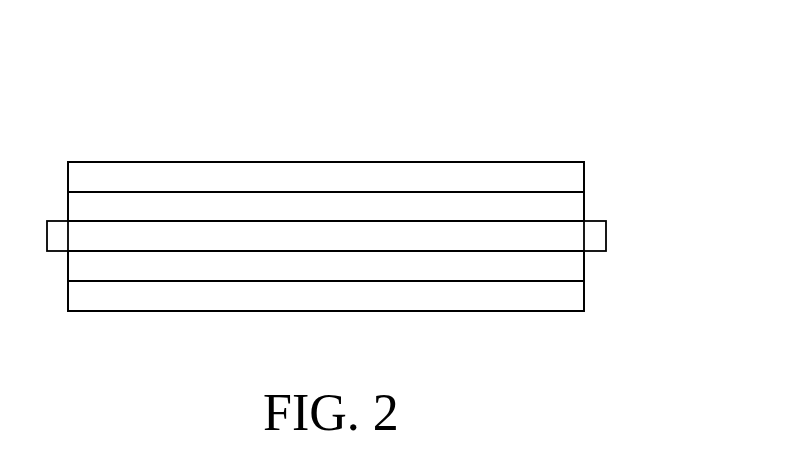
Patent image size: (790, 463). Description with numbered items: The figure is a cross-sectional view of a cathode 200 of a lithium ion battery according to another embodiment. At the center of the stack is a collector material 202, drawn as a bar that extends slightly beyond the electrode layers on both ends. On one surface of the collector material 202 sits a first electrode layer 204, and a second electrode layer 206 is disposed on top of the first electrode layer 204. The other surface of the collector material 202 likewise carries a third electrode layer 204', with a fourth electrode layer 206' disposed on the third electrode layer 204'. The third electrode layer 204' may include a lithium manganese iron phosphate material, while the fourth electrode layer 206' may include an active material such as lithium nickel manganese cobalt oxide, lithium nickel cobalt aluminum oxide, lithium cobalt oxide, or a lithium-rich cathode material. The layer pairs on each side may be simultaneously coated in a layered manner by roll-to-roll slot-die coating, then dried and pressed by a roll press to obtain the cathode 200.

The cathode of a lithium ion battery 200 is at (566, 102).
The collector material 202 is at (604, 236).
The first electrode layer 204 is at (378, 204).
The second electrode layer 206 is at (378, 175).
The third electrode layer 204' is at (380, 264).
The fourth electrode layer 206' is at (380, 294).